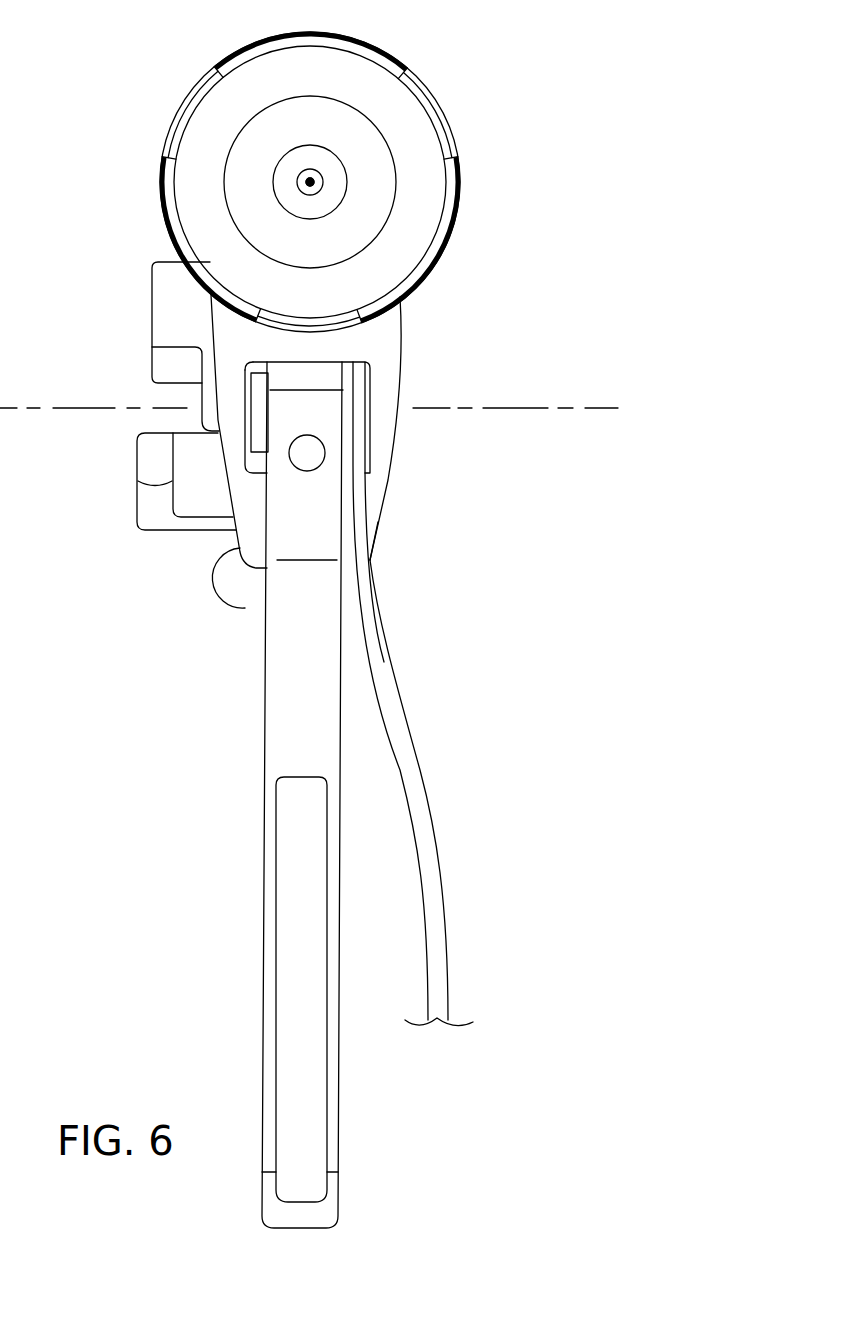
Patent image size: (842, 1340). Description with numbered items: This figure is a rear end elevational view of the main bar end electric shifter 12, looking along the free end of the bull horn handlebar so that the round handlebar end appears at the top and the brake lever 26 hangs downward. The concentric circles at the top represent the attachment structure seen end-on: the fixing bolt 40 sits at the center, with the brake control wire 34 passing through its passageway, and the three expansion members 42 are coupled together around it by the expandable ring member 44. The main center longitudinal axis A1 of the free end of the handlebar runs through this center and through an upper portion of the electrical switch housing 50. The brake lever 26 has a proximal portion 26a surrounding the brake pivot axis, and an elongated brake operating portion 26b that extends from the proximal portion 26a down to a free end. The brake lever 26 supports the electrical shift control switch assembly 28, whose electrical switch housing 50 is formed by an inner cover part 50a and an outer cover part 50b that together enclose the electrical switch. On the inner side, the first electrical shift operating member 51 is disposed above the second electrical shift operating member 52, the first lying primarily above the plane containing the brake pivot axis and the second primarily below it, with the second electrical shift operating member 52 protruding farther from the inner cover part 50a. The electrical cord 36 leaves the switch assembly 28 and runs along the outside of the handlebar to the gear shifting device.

The main bar end electric shifter 12 is at (134, 56).
The brake lever 26 is at (263, 712).
The proximal portion 26a is at (303, 387).
The elongated brake operating portion 26b is at (339, 1108).
The electrical shift control switch assembly 28 is at (110, 437).
The brake control wire 34 is at (310, 182).
The electrical cord 36 is at (439, 815).
The fixing bolt 40 is at (210, 135).
The expansion members 42 is at (343, 46).
The expandable ring member 44 is at (439, 116).
The electrical switch housing 50 is at (475, 513).
The inner cover part 50a is at (245, 607).
The outer cover part 50b is at (380, 523).
The first electrical shift operating member 51 is at (148, 321).
The second electrical shift operating member 52 is at (135, 504).
The main center longitudinal axis A1 is at (310, 182).